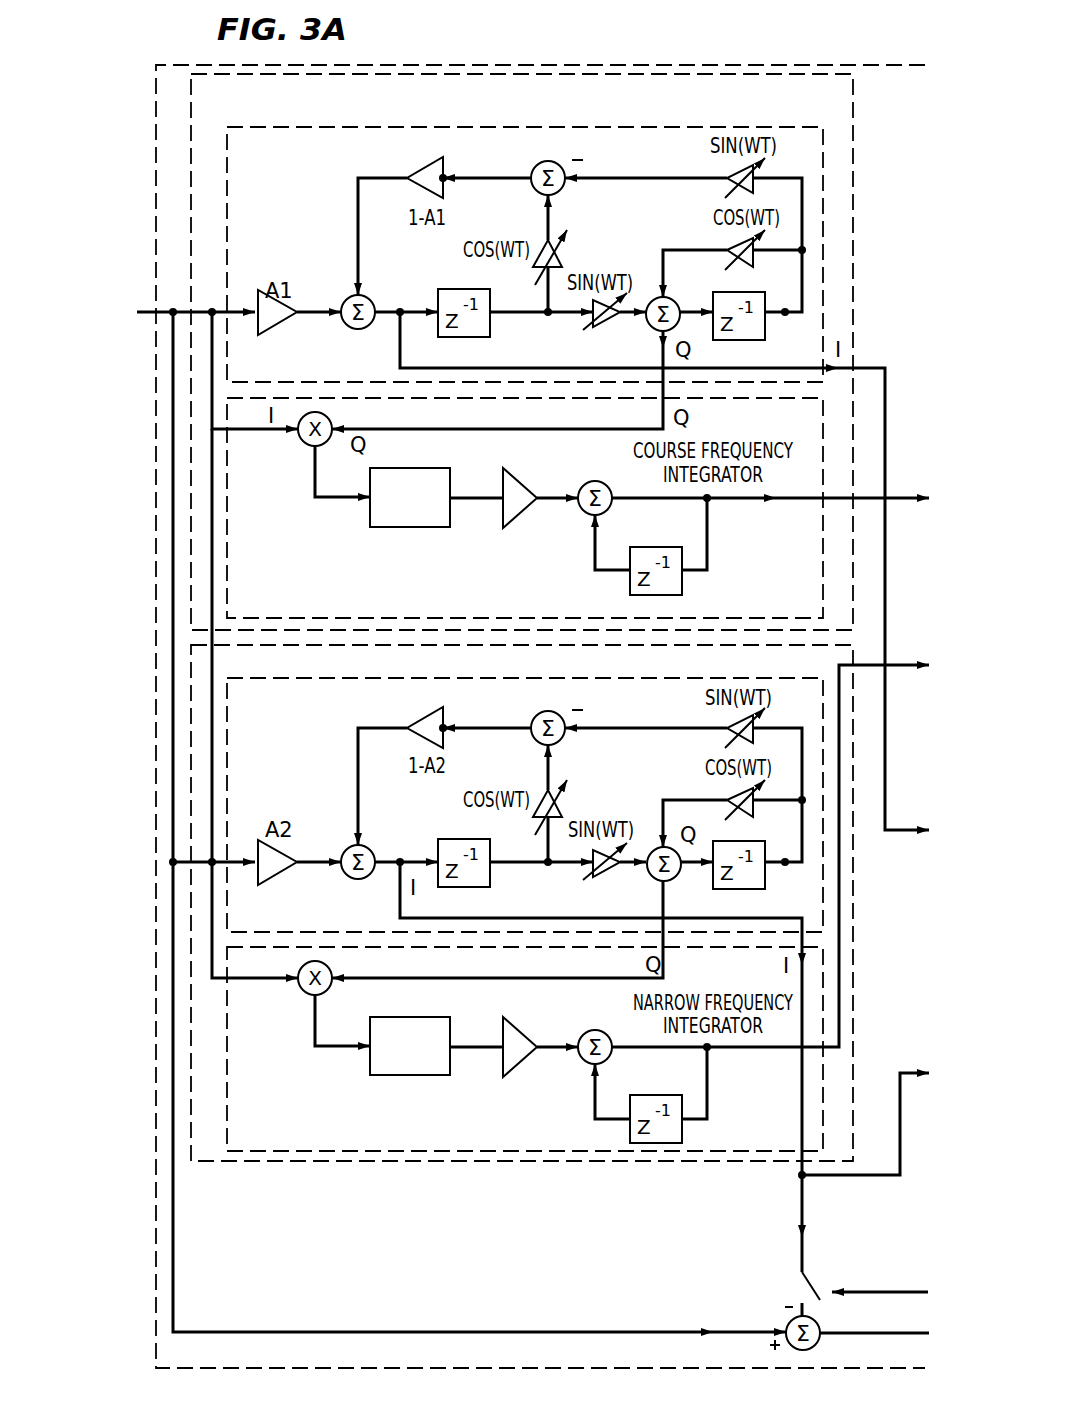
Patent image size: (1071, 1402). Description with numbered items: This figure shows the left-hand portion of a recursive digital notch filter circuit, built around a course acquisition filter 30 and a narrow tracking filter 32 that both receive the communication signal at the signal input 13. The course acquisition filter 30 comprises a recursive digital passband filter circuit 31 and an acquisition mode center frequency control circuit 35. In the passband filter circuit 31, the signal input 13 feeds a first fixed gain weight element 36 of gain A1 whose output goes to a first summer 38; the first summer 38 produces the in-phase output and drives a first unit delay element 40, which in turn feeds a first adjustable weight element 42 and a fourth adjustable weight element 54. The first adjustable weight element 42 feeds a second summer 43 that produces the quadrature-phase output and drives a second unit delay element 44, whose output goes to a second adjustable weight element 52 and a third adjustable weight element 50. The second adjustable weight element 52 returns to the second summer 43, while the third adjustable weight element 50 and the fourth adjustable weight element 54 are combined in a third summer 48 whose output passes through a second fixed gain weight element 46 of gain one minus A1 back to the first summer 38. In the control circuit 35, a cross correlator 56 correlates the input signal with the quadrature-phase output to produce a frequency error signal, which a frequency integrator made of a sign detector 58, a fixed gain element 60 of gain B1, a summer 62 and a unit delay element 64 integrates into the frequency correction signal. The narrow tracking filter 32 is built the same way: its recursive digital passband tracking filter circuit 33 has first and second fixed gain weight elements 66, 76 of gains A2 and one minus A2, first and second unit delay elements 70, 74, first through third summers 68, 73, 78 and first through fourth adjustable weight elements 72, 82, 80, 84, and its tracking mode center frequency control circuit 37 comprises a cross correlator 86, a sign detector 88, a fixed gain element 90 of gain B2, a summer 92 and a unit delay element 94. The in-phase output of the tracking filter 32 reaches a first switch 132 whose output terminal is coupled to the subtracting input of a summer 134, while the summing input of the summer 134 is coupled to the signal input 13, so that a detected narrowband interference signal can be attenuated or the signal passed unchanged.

The signal input 13 is at (155, 310).
The course acquisition filter 30 is at (853, 247).
The recursive digital passband filter circuit 31 is at (227, 205).
The narrow tracking filter 32 is at (418, 1161).
The recursive digital passband tracking filter circuit 33 is at (227, 745).
The acquisition mode center frequency control circuit 35 is at (227, 552).
The first fixed gain weight element 36 is at (285, 325).
The tracking mode center frequency control circuit 37 is at (227, 1075).
The first summer 38 is at (348, 298).
The first unit delay element 40 is at (446, 290).
The first adjustable weight element 42 is at (612, 325).
The second summer 43 is at (657, 298).
The second unit delay element 44 is at (762, 340).
The second fixed gain weight element 46 is at (410, 170).
The third summer 48 is at (535, 170).
The third adjustable weight element 50 is at (727, 175).
The second adjustable weight element 52 is at (727, 247).
The fourth adjustable weight element 54 is at (542, 245).
The cross correlator 56 is at (330, 416).
The sign detector 58 is at (450, 475).
The fixed gain element 60 is at (530, 478).
The summer 62 is at (585, 513).
The unit delay element 64 is at (682, 585).
The first fixed gain weight element 66 is at (285, 875).
The first summer 68 is at (348, 848).
The first unit delay element 70 is at (446, 840).
The first adjustable weight element 72 is at (610, 876).
The second summer 73 is at (676, 880).
The second unit delay element 74 is at (766, 888).
The second fixed gain weight element 76 is at (410, 720).
The third summer 78 is at (535, 720).
The third adjustable weight element 80 is at (727, 725).
The second adjustable weight element 82 is at (727, 797).
The fourth adjustable weight element 84 is at (542, 795).
The cross correlator 86 is at (300, 990).
The sign detector 88 is at (413, 1017).
The fixed gain element 90 is at (522, 1062).
The summer 92 is at (585, 1030).
The unit delay element 94 is at (682, 1133).
The first switch 132 is at (818, 1285).
The summer 134 is at (820, 1342).